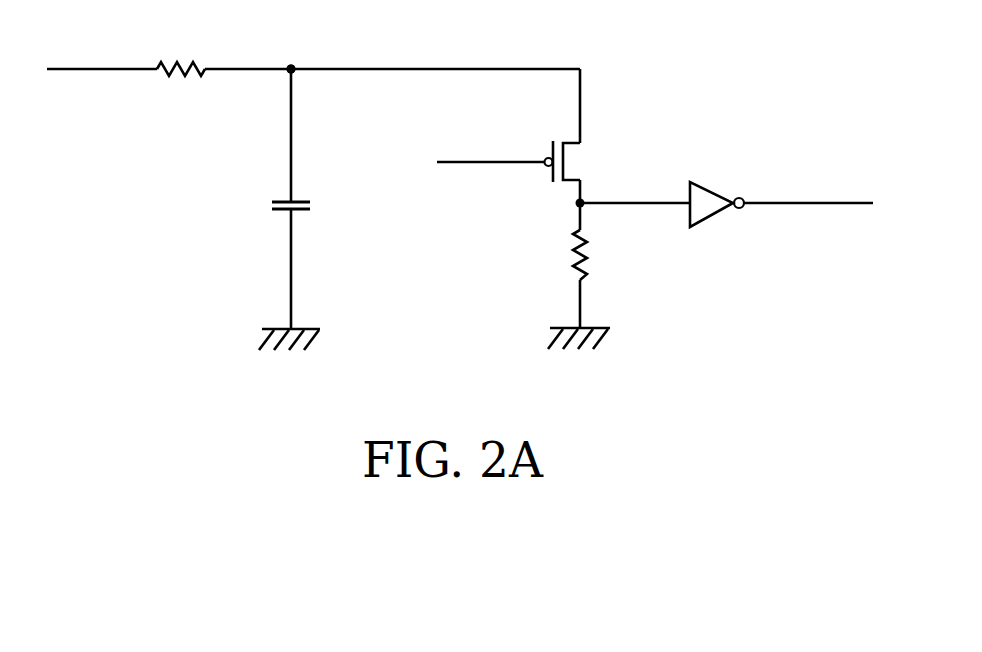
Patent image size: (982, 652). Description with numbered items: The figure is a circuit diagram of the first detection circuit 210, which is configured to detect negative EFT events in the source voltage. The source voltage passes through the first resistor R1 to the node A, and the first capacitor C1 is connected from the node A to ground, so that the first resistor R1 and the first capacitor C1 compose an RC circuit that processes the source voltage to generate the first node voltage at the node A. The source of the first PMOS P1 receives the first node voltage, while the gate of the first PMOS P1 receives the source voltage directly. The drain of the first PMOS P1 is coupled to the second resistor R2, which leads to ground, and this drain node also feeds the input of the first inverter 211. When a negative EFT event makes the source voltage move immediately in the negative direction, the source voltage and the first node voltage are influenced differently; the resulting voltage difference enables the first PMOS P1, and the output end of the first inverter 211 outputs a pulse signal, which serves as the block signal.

The first detection circuit 210 is at (763, 39).
The first inverter 211 is at (716, 190).
The first resistor R1 is at (188, 74).
The node A is at (293, 71).
The first capacitor C1 is at (312, 205).
The first PMOS P1 is at (578, 161).
The second resistor R2 is at (590, 250).